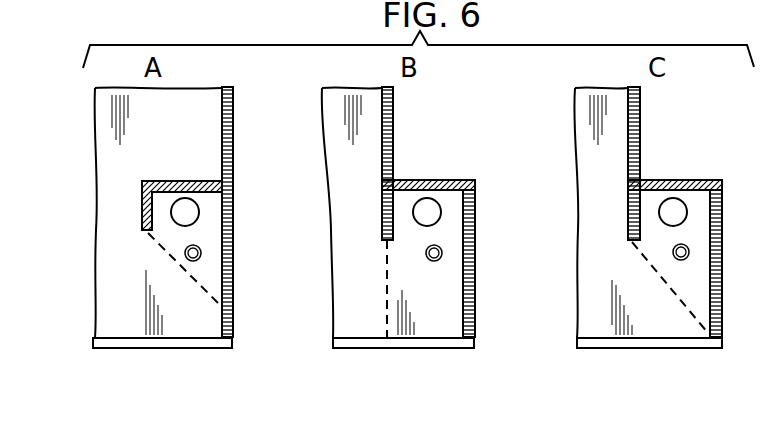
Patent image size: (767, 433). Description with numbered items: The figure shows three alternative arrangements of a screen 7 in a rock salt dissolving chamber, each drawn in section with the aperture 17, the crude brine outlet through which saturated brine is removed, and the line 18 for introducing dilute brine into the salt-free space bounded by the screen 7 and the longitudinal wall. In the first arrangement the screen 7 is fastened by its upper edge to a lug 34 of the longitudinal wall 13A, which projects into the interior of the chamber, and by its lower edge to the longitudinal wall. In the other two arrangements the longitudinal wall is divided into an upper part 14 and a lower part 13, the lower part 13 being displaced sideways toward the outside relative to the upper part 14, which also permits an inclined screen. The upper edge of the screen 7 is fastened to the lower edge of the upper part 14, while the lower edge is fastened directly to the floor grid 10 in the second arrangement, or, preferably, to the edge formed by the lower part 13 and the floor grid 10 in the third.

In FIG. 6A, the screen 7 is at (185, 270).
In FIG. 6B, the screen 7 is at (387, 288).
In FIG. 6C, the screen 7 is at (664, 282).
In FIG. 6A, the floor grid 10 is at (112, 338).
In FIG. 6B, the floor grid 10 is at (352, 338).
In FIG. 6C, the floor grid 10 is at (596, 338).
In FIG. 6B, the lower part of the longitudinal wall 13 is at (475, 270).
In FIG. 6C, the lower part of the longitudinal wall 13 is at (722, 296).
In FIG. 6A, the longitudinal wall 13A is at (233, 131).
In FIG. 6B, the upper part of the longitudinal wall 14 is at (393, 118).
In FIG. 6C, the upper part of the longitudinal wall 14 is at (640, 116).
In FIG. 6A, the aperture 17 is at (199, 212).
In FIG. 6B, the aperture 17 is at (441, 212).
In FIG. 6C, the aperture 17 is at (675, 198).
In FIG. 6A, the line 18 is at (201, 253).
In FIG. 6B, the line 18 is at (432, 261).
In FIG. 6C, the line 18 is at (689, 252).
In FIG. 6A, the lug 34 is at (156, 181).